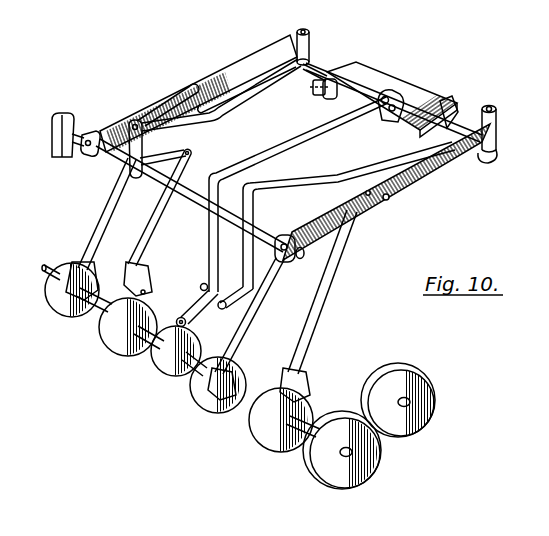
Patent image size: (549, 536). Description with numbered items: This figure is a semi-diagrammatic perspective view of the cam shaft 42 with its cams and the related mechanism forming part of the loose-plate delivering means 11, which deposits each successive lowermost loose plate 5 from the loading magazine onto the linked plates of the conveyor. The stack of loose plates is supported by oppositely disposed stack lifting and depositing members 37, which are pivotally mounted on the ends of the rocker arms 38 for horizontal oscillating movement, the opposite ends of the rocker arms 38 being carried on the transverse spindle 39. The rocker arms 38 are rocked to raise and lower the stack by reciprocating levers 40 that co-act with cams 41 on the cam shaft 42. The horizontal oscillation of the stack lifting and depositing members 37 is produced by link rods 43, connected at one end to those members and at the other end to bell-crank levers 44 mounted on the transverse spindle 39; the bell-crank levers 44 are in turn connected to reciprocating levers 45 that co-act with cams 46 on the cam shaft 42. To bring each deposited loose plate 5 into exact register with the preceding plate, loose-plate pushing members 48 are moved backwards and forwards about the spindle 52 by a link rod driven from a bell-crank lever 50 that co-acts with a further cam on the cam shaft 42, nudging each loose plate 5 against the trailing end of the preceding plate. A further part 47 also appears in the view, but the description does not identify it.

The loose plate 5 is at (390, 92).
The loose-plate delivering means 11 is at (317, 50).
The stack lifting and depositing members 37 is at (297, 90).
The rocker arms 38 is at (135, 118).
The transverse spindle 39 is at (89, 133).
The reciprocating levers 40 is at (117, 220).
The cams 41 is at (74, 320).
The cam shaft 42 is at (196, 370).
The link rods 43 is at (232, 110).
The bell-crank levers 44 is at (130, 165).
The reciprocating levers 45 is at (161, 232).
The cams 46 is at (104, 347).
The bracket 47 is at (446, 102).
The loose-plate pushing members 48 is at (404, 100).
The bell-crank lever 50 is at (210, 240).
The spindle 52 is at (201, 285).